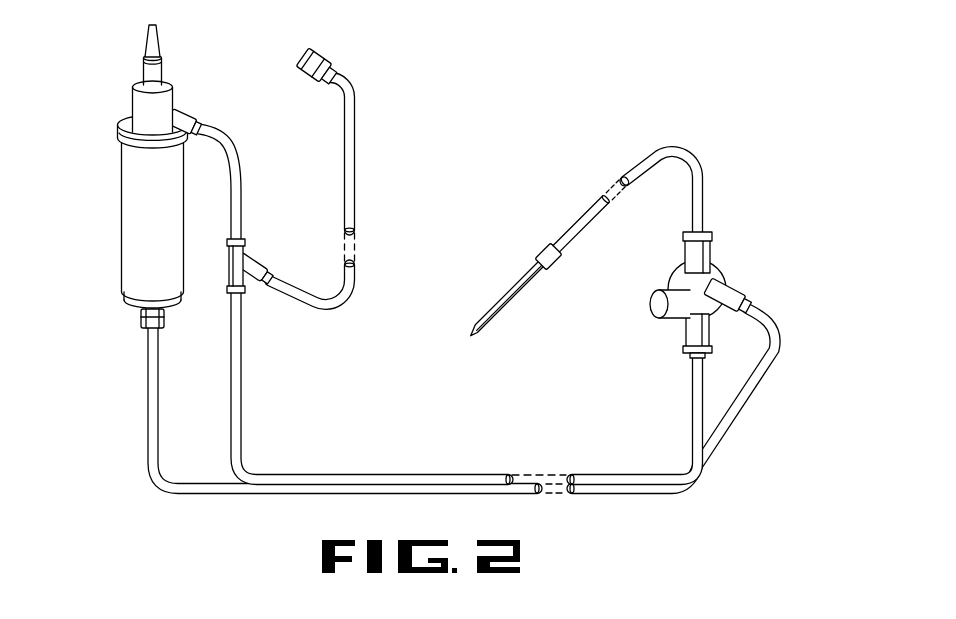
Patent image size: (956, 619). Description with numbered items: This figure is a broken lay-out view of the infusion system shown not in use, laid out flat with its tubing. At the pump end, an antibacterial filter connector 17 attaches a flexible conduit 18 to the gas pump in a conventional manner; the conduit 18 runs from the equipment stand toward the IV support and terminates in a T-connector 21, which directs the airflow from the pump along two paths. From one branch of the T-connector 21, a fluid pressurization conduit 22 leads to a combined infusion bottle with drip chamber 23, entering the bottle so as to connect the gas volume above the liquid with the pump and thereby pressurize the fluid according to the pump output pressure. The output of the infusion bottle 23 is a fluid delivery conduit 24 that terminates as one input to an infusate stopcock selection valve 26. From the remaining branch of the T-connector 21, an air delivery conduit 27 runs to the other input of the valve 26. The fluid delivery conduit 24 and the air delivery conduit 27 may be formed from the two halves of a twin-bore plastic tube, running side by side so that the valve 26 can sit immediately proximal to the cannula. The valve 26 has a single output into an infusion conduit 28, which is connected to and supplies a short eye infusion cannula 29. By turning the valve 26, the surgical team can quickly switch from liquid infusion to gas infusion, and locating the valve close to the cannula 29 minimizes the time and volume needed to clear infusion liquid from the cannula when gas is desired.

The antibacterial filter connector 17 is at (299, 56).
The conduit 18 is at (356, 151).
The T-connector 21 is at (258, 273).
The fluid pressurization conduit 22 is at (238, 156).
The combined infusion bottle with drip chamber 23 is at (131, 207).
The fluid delivery conduit 24 is at (148, 388).
The infusate stopcock selection valve 26 is at (716, 273).
The air delivery conduit 27 is at (243, 392).
The infusion conduit 28 is at (690, 157).
The eye infusion cannula 29 is at (502, 297).